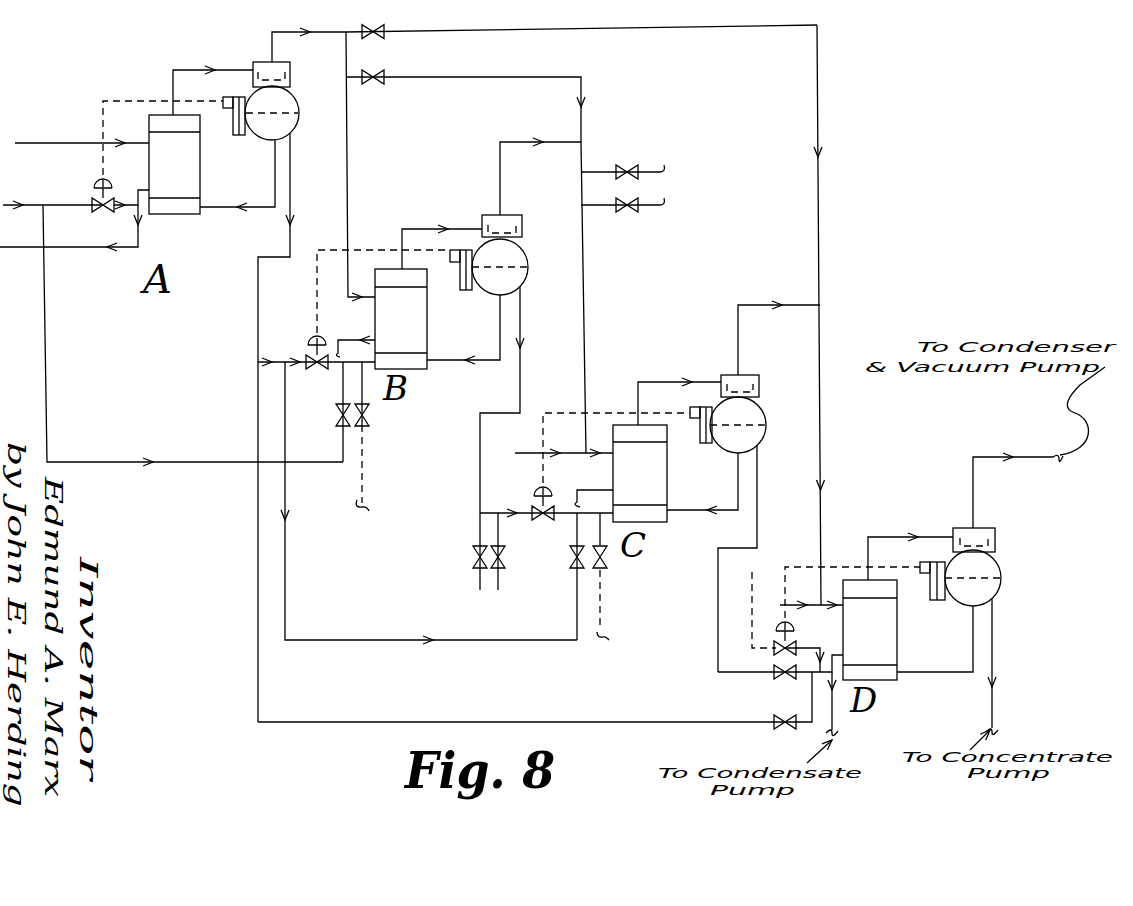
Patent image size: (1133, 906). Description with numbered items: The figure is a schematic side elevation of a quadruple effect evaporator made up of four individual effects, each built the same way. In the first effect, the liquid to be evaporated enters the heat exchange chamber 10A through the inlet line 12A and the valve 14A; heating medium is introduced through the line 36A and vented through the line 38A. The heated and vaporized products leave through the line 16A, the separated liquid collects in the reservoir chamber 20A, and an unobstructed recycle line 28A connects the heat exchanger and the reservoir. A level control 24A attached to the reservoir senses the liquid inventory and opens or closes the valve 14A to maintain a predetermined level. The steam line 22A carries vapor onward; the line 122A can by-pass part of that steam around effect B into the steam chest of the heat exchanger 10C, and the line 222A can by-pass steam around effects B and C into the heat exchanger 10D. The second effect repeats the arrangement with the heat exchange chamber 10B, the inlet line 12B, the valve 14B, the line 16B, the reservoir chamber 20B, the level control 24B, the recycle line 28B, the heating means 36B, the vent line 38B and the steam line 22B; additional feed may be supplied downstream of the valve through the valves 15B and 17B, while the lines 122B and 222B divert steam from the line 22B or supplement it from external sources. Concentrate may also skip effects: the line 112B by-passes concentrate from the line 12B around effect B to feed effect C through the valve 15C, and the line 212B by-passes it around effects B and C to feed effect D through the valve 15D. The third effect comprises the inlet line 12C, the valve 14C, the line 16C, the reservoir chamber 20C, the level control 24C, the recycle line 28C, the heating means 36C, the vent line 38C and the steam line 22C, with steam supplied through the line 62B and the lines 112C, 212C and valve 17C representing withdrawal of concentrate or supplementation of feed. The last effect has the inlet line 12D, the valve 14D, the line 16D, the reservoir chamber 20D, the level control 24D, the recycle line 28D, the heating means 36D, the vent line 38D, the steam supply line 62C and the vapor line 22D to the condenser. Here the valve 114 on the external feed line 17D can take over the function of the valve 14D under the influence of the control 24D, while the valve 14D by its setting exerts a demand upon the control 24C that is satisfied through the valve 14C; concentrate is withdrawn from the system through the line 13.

The heat exchange chamber 10A is at (201, 187).
The inlet line 12A is at (57, 205).
The valve 14A is at (98, 213).
The line 16A is at (190, 70).
The reservoir chamber 20A is at (291, 128).
The steam line 22A is at (295, 24).
The level control 24A is at (236, 137).
The recycle line 28A is at (243, 210).
The heating medium inlet line 36A is at (40, 134).
The vent line 38A is at (85, 250).
The steam by-pass line 122A is at (385, 73).
The steam by-pass line 222A is at (380, 28).
The heat exchange chamber 10B is at (428, 337).
The inlet line 12B is at (257, 318).
The valve 14B is at (313, 370).
The valve 15B is at (337, 415).
The line 16B is at (422, 229).
The valve 17B is at (369, 415).
The reservoir chamber 20B is at (526, 282).
The steam line 22B is at (525, 141).
The level control 24B is at (462, 292).
The recycle line 28B is at (478, 363).
The heating means 36B is at (350, 157).
The vent line 38B is at (351, 338).
The concentrate by-pass line 112B is at (284, 445).
The steam diverting line 122B is at (634, 213).
The concentrate by-pass line 212B is at (257, 411).
The steam diverting line 222B is at (632, 165).
The heat exchange chamber 10C is at (668, 490).
The inlet line 12C is at (479, 483).
The valve 14C is at (540, 522).
The valve 15C is at (573, 567).
The line 16C is at (669, 382).
The valve 17C is at (605, 562).
The reservoir chamber 20C is at (762, 437).
The steam line 22C is at (764, 306).
The level control 24C is at (702, 445).
The recycle line 28C is at (712, 512).
The heating means 36C is at (588, 297).
The vent line 38C is at (585, 483).
The steam supply line 62B is at (520, 453).
The concentrate line 112C is at (503, 578).
The concentrate line 212C is at (477, 580).
The heat exchange chamber 10D is at (898, 650).
The inlet line 12D is at (717, 676).
The valve 14D is at (782, 680).
The valve 15D is at (783, 730).
The line 16D is at (890, 538).
The feed line 17D is at (809, 643).
The reservoir chamber 20D is at (1000, 592).
The vapor line 22D is at (996, 460).
The level control 24D is at (925, 603).
The recycle line 28D is at (943, 676).
The heating means 36D is at (822, 405).
The vent line 38D is at (842, 728).
The steam supply line 62C is at (775, 586).
The valve 114 is at (762, 652).
The concentrate withdrawal line 13 is at (995, 653).